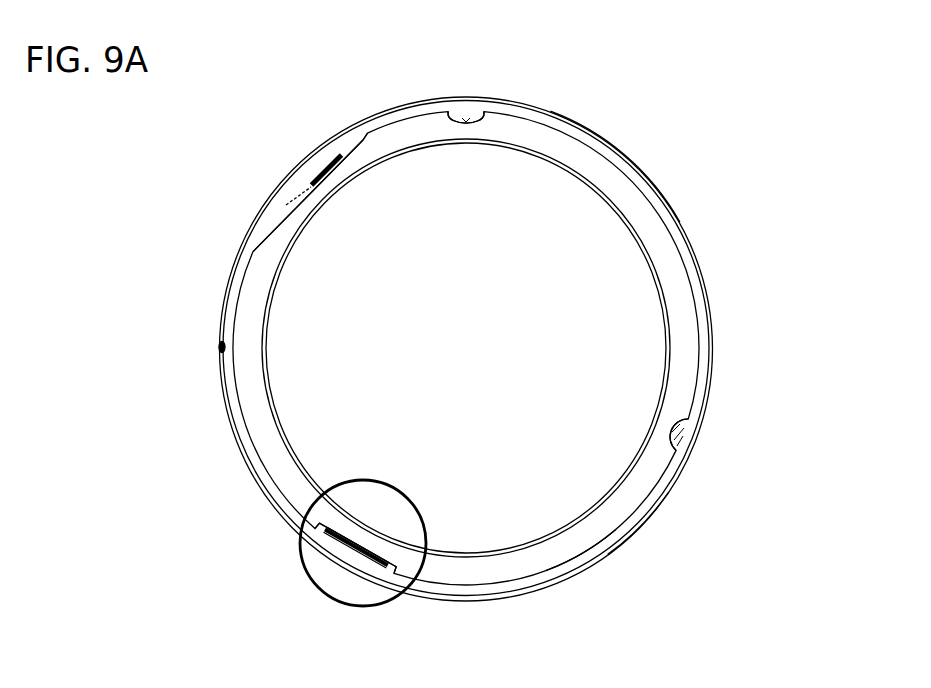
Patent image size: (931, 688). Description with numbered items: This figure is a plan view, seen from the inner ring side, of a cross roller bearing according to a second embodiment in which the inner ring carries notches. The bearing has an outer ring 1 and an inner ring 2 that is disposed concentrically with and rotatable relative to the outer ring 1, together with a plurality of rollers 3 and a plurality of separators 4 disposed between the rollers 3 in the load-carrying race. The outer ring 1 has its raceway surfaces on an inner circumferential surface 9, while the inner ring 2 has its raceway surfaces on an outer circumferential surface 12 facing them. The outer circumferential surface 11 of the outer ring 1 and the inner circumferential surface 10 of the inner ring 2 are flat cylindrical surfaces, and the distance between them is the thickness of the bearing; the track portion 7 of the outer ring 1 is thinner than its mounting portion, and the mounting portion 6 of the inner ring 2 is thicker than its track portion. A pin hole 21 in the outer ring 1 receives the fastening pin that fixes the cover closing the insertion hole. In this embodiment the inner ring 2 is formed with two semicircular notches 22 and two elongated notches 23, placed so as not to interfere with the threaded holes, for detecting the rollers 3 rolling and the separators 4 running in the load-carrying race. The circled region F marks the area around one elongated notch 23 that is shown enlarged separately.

The outer ring 1 is at (268, 223).
The inner ring 2 is at (687, 290).
The roller 3 is at (303, 193).
The separator 4 is at (300, 185).
The mounting portion 6 is at (587, 548).
The track portion 7 is at (640, 522).
The inner circumferential surface 9 is at (461, 124).
The inner circumferential surface 10 is at (268, 306).
The outer circumferential surface 11 is at (665, 185).
The outer circumferential surface 12 is at (598, 127).
The pin hole 21 is at (220, 350).
The semicircular notch 22 is at (462, 120).
The elongated notch 23 is at (342, 158).
The F region F is at (301, 557).